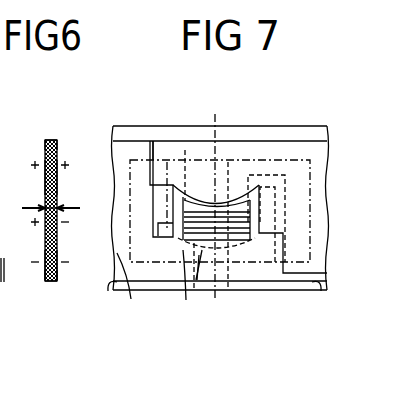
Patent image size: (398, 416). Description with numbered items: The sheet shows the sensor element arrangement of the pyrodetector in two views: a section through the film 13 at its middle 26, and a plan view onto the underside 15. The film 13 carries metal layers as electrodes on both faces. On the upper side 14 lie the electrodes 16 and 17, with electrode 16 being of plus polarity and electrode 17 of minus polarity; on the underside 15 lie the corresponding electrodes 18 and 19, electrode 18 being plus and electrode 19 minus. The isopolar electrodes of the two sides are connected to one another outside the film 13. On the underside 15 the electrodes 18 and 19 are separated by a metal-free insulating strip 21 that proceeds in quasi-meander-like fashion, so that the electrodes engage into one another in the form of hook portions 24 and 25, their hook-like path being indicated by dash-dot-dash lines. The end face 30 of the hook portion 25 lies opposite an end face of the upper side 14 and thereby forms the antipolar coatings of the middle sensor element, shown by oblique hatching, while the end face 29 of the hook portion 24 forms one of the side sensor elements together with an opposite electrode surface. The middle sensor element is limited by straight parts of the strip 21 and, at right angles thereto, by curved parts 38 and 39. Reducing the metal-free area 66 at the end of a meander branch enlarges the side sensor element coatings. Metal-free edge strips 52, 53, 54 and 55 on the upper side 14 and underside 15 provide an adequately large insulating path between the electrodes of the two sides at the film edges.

In FIG. 6, the film 13 is at (52, 140).
In FIG. 7, the film 13 is at (318, 252).
In FIG. 6, the upper side 14 is at (24, 210).
In FIG. 6, the underside 15 is at (77, 208).
In FIG. 7, the underside 15 is at (221, 303).
In FIG. 6, the electrode 16 is at (45, 178).
In FIG. 6, the electrode 17 is at (45, 270).
In FIG. 6, the electrode 18 is at (57, 178).
In FIG. 7, the electrode 18 is at (220, 197).
In FIG. 6, the electrode 19 is at (57, 270).
In FIG. 7, the electrode 19 is at (186, 300).
In FIG. 7, the metal-free insulating strip 21 is at (162, 236).
In FIG. 7, the hook portion 24 is at (235, 160).
In FIG. 7, the hook portion 25 is at (196, 280).
In FIG. 7, the middle 26 is at (221, 189).
In FIG. 7, the end face 29 is at (153, 245).
In FIG. 7, the end face 30 is at (238, 226).
In FIG. 7, the curved part 38 is at (229, 245).
In FIG. 7, the curved part 39 is at (192, 197).
In FIG. 6, the metal-free edge strip 52 is at (47, 281).
In FIG. 6, the metal-free edge strip 53 is at (46, 140).
In FIG. 6, the metal-free edge strip 54 is at (55, 281).
In FIG. 7, the metal-free edge strip 54 is at (197, 280).
In FIG. 6, the metal-free edge strip 55 is at (62, 130).
In FIG. 7, the metal-free edge strip 55 is at (153, 141).
In FIG. 7, the metal-free area 66 is at (266, 248).